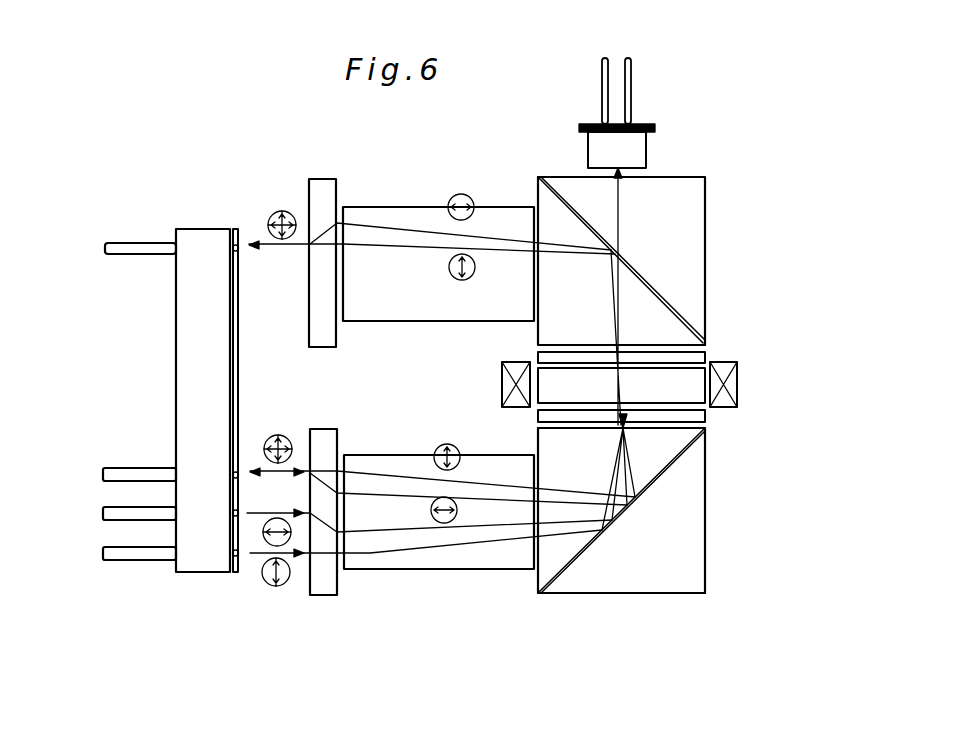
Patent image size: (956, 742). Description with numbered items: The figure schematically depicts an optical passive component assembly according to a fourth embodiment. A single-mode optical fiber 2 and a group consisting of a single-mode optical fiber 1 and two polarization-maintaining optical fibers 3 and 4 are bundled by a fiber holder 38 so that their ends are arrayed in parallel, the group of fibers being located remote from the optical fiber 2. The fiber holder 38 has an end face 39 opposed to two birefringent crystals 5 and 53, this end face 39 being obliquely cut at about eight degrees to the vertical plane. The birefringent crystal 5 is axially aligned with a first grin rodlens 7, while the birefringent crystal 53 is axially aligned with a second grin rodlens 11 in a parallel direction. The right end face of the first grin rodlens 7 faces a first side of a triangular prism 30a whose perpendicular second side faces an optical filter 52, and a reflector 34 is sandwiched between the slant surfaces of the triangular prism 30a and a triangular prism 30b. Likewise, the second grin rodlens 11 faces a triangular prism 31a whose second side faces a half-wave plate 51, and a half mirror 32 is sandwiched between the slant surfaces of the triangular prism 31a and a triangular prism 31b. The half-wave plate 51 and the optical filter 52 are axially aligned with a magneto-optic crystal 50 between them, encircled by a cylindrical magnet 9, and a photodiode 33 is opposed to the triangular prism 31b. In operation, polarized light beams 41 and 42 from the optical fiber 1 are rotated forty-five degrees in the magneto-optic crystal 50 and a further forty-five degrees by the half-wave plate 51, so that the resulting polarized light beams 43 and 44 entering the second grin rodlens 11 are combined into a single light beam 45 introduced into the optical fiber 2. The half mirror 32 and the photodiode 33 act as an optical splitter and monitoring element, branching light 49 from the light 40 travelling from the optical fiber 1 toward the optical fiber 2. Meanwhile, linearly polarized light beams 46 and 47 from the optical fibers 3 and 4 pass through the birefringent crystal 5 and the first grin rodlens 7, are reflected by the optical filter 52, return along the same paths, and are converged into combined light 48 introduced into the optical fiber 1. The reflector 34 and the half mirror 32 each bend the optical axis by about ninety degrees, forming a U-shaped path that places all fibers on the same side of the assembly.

The single-mode optical fiber 1 is at (145, 470).
The single-mode optical fiber 2 is at (130, 252).
The polarization-maintaining optical fiber 3 is at (143, 555).
The polarization-maintaining optical fiber 4 is at (122, 515).
The birefringent crystal 5 is at (327, 592).
The first grin rodlens 7 is at (500, 568).
The cylindrical magnet 9 is at (500, 385).
The second grin rodlens 11 is at (497, 218).
The triangular prism 30a is at (551, 563).
The triangular prism 30b is at (657, 583).
The triangular prism 31a is at (553, 332).
The triangular prism 31b is at (690, 238).
The half mirror 32 is at (643, 273).
The photodiode 33 is at (640, 145).
The reflector 34 is at (677, 455).
The fiber holder 38 is at (200, 566).
The end face 39 is at (242, 341).
The light 40 is at (303, 468).
The polarized light beam 41 is at (382, 470).
The polarized light beam 42 is at (398, 490).
The polarized light beam 43 is at (386, 222).
The polarized light beam 44 is at (421, 222).
The single light beam 45 is at (252, 242).
The linearly polarized light beam 46 is at (300, 556).
The linearly polarized light beam 47 is at (253, 530).
The combined light 48 is at (250, 468).
The branched light 49 is at (617, 205).
The magneto-optic crystal 50 is at (687, 380).
The half-wave plate 51 is at (680, 352).
The optical filter 52 is at (697, 418).
The birefringent crystal 53 is at (331, 200).